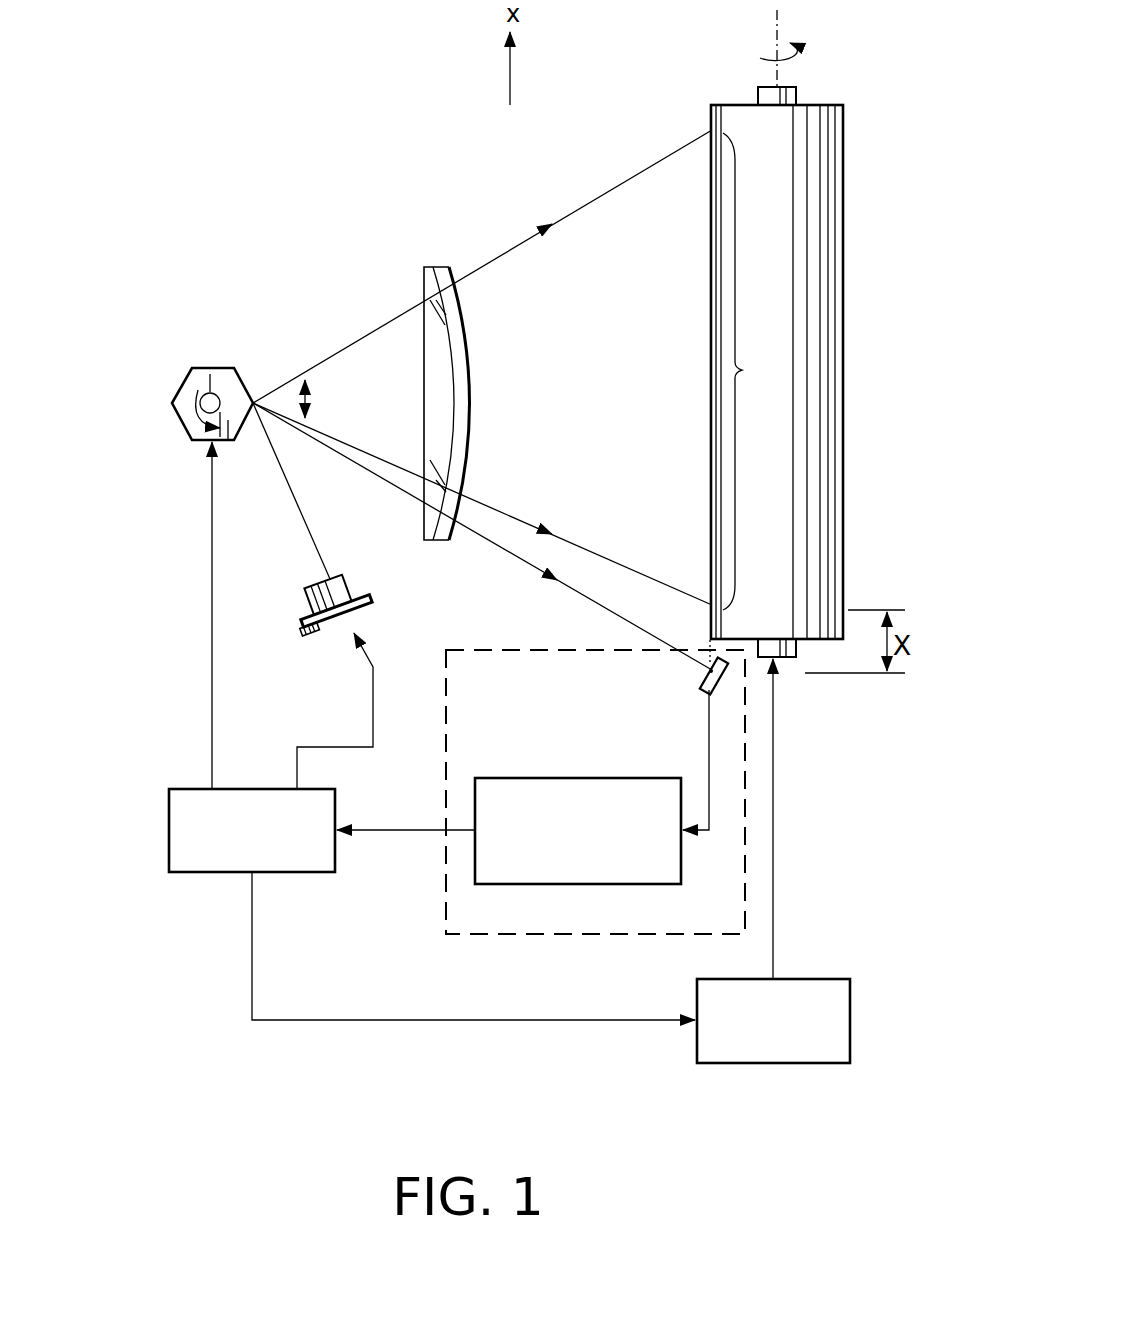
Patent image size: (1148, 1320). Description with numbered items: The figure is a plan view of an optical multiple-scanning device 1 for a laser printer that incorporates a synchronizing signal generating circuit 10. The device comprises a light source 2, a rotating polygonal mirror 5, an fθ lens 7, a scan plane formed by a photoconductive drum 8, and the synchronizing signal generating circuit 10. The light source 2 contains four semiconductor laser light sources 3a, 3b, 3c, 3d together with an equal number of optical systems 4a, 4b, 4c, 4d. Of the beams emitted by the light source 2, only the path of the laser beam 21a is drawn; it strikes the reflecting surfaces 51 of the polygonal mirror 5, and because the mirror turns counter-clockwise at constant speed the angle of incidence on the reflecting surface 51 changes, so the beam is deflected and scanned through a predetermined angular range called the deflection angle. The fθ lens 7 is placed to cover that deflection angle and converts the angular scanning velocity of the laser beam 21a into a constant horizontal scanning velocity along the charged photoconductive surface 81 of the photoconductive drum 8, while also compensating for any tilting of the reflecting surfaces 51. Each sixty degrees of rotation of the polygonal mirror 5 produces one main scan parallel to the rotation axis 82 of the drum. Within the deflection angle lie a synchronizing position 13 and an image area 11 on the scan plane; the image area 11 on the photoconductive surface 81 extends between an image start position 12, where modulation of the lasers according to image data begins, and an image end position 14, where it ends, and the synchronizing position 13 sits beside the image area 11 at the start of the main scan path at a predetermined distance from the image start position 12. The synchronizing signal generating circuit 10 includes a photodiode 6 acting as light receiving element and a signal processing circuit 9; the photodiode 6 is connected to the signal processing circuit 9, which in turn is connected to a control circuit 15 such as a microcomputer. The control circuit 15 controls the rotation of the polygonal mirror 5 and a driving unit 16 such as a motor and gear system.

The optical multiple-scanning device 1 is at (245, 158).
The light source 2 is at (293, 616).
The laser light source 3a is at (318, 638).
The laser light source 3b is at (312, 640).
The laser light source 3c is at (307, 640).
The laser light source 3d is at (300, 640).
The optical system 4a is at (328, 588).
The optical system 4b is at (318, 593).
The optical system 4c is at (312, 598).
The optical system 4d is at (308, 605).
The rotating polygonal mirror 5 is at (198, 368).
The reflecting surface 51 is at (242, 368).
The photodiode 6 is at (722, 688).
The fθ lens 7 is at (449, 350).
The photoconductive drum 8 is at (830, 102).
The photoconductive surface 81 is at (708, 420).
The rotation axis 82 is at (775, 80).
The signal processing circuit 9 is at (681, 868).
The synchronizing signal generating circuit 10 is at (446, 722).
The image area 11 is at (754, 371).
The image start position 12 is at (710, 604).
The synchronizing position 13 is at (708, 673).
The image end position 14 is at (711, 130).
The control circuit 15 is at (194, 873).
The driving unit 16 is at (812, 979).
The laser beam 21a is at (587, 204).